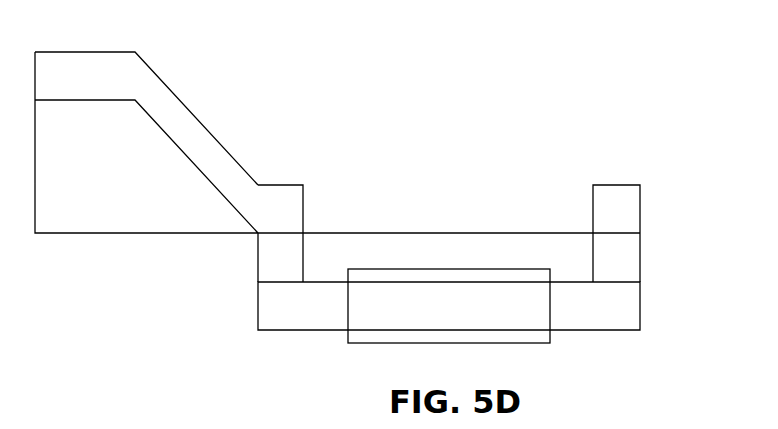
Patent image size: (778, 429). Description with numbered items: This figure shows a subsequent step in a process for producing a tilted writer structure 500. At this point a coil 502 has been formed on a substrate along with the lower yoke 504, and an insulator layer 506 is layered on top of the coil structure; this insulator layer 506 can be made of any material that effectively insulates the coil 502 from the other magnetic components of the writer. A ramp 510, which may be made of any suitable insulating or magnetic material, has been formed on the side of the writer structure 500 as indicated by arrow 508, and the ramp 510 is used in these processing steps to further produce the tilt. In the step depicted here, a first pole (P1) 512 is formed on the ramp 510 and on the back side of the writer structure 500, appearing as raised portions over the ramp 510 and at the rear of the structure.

The tilted writer structure 500 is at (495, 117).
The coil 502 is at (425, 320).
The lower yoke 504 is at (620, 310).
The insulator layer 506 is at (453, 248).
The arrow 508 is at (39, 32).
The ramp 510 is at (93, 174).
The first pole (P1) 512 is at (283, 202).